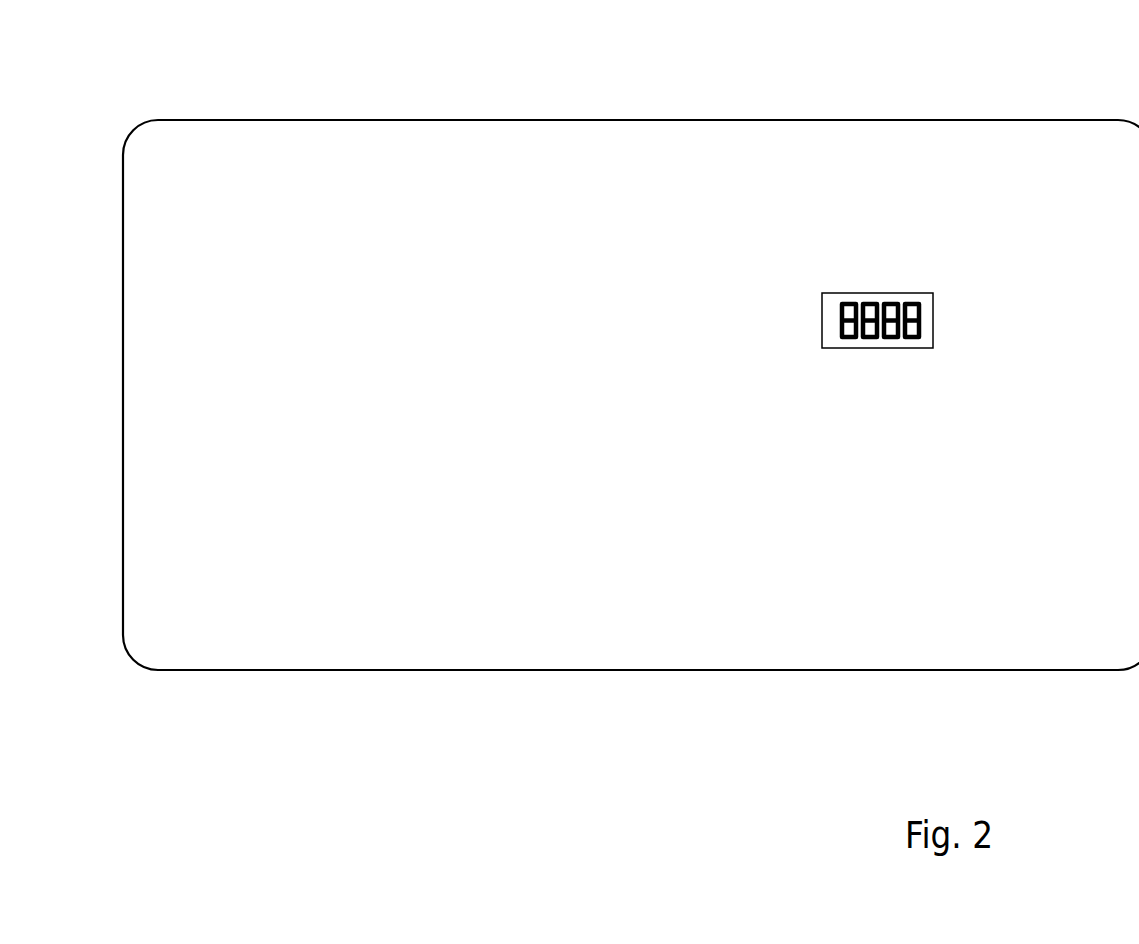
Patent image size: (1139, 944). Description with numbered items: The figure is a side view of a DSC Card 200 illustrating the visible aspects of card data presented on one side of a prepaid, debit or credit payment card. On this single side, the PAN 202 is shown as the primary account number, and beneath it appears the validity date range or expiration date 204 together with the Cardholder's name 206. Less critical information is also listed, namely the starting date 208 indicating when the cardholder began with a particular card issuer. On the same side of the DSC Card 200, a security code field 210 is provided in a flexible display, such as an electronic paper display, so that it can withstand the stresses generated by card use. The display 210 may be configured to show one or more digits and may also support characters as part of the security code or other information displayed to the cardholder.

The DSC Card 200 is at (763, 120).
The PAN 202 is at (488, 360).
The validity date range or expiration date 204 is at (488, 528).
The Cardholder's name 206 is at (495, 622).
The starting date 208 is at (840, 516).
The security code field 210 is at (868, 290).